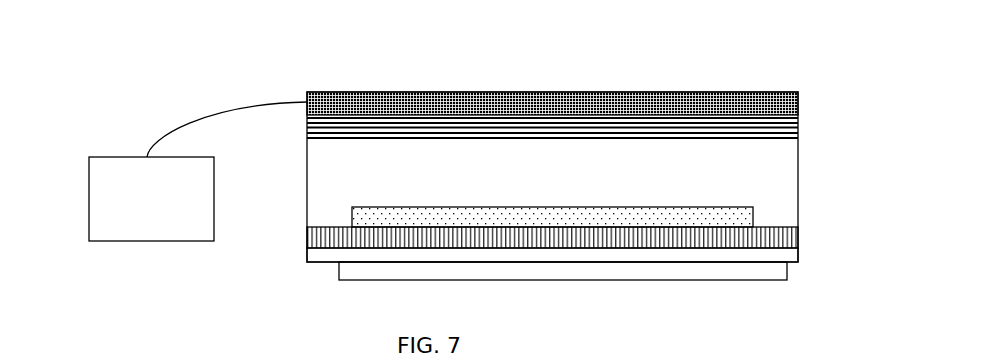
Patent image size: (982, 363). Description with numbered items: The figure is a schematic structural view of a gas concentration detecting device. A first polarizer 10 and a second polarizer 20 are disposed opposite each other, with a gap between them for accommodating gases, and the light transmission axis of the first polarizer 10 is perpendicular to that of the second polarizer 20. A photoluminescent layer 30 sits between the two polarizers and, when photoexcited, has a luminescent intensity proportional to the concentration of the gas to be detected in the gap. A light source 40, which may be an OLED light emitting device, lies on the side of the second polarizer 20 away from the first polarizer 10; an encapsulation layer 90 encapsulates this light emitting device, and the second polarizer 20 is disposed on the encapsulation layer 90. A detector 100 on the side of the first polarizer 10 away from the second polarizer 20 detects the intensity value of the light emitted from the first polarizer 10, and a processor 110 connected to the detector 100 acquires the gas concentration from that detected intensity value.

The first polarizer 10 is at (758, 128).
The detector 100 is at (680, 92).
The photoluminescent layer 30 is at (733, 216).
The second polarizer 20 is at (762, 237).
The encapsulation layer 90 is at (763, 256).
The light source 40 is at (760, 267).
The processor 110 is at (122, 212).